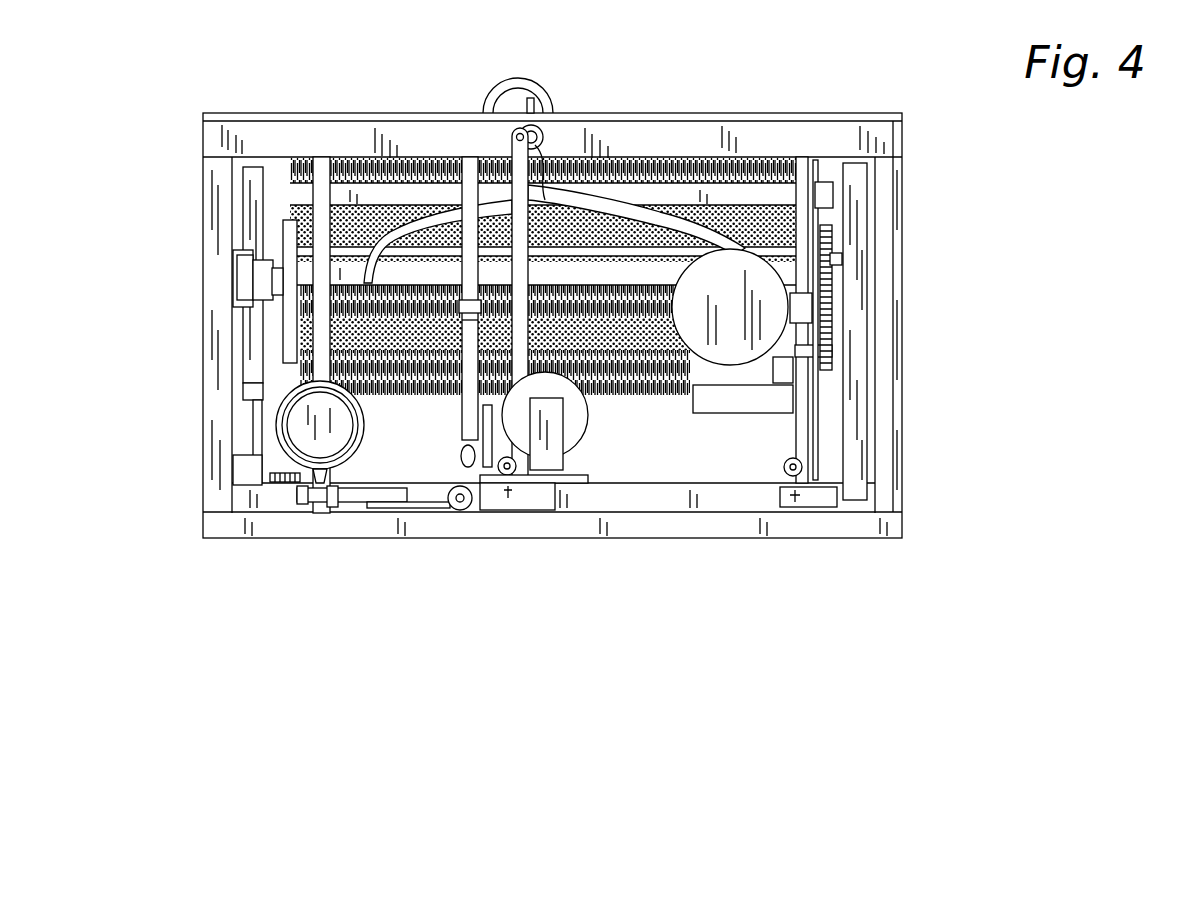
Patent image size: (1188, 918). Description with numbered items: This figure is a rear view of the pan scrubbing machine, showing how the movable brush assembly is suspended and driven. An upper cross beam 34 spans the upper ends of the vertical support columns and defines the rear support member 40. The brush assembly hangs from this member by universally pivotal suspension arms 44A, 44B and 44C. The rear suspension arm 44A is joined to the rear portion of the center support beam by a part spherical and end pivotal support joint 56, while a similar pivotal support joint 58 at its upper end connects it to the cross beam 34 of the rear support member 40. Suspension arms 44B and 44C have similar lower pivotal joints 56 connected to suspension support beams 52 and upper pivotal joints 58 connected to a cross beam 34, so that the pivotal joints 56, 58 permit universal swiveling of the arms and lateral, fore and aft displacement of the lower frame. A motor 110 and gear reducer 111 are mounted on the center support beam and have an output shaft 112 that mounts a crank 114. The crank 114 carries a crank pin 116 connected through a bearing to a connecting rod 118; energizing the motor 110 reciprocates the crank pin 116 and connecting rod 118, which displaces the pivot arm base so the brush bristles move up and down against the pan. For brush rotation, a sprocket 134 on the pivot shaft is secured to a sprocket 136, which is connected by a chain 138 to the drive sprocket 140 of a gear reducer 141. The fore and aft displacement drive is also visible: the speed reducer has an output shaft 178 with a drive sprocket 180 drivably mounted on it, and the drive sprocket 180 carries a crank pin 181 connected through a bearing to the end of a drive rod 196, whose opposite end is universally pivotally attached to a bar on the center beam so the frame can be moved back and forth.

The upper cross beam 34 is at (718, 114).
The rear support member 40 is at (660, 95).
The rear suspension arm 44A is at (540, 170).
The suspension arm 44B is at (322, 160).
The suspension arm 44C is at (815, 165).
The upper pivotal support joint 58 is at (502, 140).
The suspension support beam 52 is at (781, 492).
The lower pivotal support joint 56 is at (340, 472).
The motor 110 is at (573, 410).
The gear reducer 111 is at (565, 470).
The output shaft 112 is at (467, 407).
The crank 114 is at (460, 434).
The crank pin 116 is at (463, 460).
The connecting rod 118 is at (335, 293).
The sprocket 134 is at (830, 195).
The sprocket 136 is at (830, 240).
The chain 138 is at (830, 285).
The drive sprocket 140 is at (830, 342).
The gear reducer 141 is at (780, 362).
The output shaft 178 is at (258, 460).
The drive sprocket 180 is at (293, 482).
The crank pin 181 is at (303, 503).
The drive rod 196 is at (317, 492).